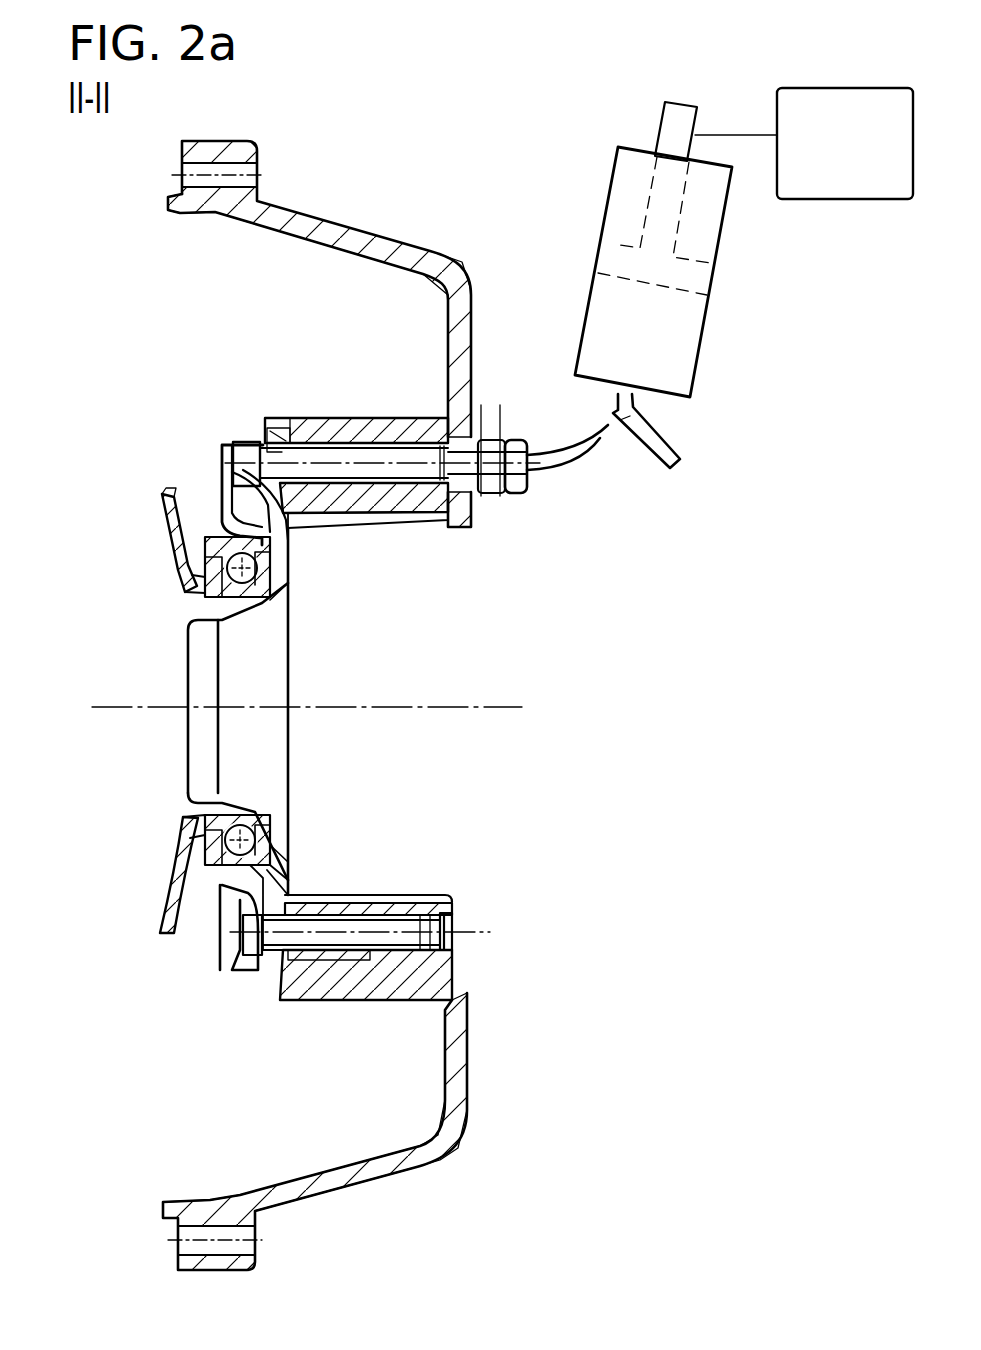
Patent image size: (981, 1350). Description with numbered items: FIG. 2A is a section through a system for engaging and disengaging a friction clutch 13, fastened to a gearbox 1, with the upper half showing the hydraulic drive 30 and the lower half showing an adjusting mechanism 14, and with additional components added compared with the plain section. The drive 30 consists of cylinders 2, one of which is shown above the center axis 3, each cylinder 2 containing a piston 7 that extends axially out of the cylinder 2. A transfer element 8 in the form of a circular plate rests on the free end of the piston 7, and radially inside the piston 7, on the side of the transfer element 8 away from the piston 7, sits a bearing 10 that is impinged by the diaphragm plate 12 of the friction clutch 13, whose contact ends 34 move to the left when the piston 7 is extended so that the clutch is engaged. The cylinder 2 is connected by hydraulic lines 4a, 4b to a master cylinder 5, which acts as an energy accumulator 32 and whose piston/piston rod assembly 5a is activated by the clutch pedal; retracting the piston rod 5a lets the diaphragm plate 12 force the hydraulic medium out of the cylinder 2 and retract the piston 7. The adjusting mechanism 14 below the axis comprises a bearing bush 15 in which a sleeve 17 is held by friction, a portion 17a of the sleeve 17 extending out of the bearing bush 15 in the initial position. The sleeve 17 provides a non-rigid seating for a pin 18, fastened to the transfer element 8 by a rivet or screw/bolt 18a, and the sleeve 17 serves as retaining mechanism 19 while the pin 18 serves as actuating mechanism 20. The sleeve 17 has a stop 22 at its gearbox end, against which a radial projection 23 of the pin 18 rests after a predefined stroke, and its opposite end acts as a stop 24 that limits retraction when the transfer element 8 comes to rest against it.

The gearbox 1 is at (426, 266).
The cylinder 2 is at (358, 424).
The center axis 3 is at (189, 706).
The hydraulic line 4a is at (582, 456).
The hydraulic line 4b is at (668, 437).
The master cylinder 5 is at (628, 342).
The piston/piston rod assembly 5a is at (668, 137).
The piston 7 is at (310, 452).
The transfer element 8 is at (223, 467).
The bearing 10 is at (207, 813).
The diaphragm plate 12 is at (164, 496).
The friction clutch 13 is at (160, 472).
The adjusting mechanism 14 is at (333, 1022).
The bearing bush 15 is at (351, 903).
The sleeve 17 is at (317, 903).
The portion of the sleeve 17a is at (298, 890).
The pin 18 is at (282, 998).
The rivet or screw/bolt 18a is at (242, 938).
The retaining mechanism 19 is at (390, 970).
The actuating mechanism 20 is at (420, 885).
The stop 22 is at (452, 950).
The radial projection 23 is at (456, 917).
The stop 24 is at (247, 967).
The drive 30 is at (324, 405).
The energy accumulator 32 is at (718, 70).
The contact ends 34 is at (160, 523).